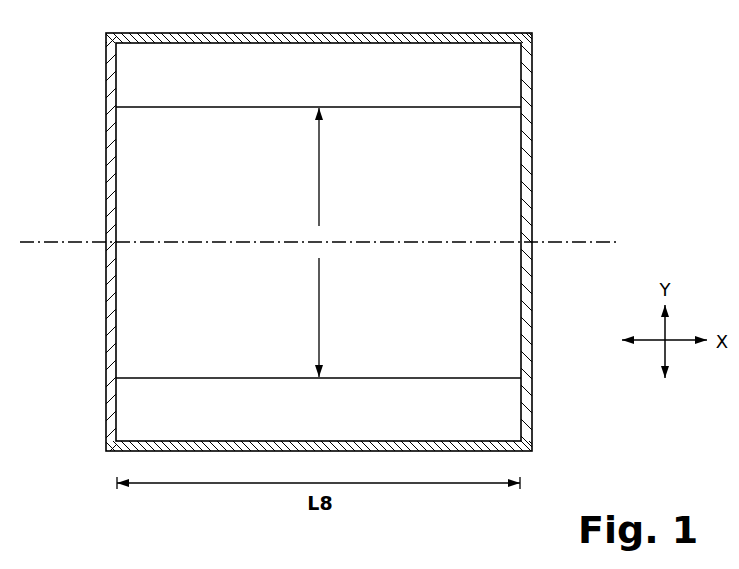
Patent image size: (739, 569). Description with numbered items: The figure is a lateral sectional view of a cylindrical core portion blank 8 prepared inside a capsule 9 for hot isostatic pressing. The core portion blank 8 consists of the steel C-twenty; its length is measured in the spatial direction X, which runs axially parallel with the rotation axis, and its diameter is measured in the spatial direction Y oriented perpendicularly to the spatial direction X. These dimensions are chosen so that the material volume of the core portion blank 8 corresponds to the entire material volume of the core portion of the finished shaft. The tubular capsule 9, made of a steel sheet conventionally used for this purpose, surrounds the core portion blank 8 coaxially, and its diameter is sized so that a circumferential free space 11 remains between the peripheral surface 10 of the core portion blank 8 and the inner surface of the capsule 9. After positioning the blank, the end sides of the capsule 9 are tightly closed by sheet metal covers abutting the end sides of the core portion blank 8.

The core portion blank 8 is at (173, 187).
The capsule 9 is at (110, 423).
The peripheral surface 10 is at (487, 101).
The circumferential free space 11 is at (293, 87).